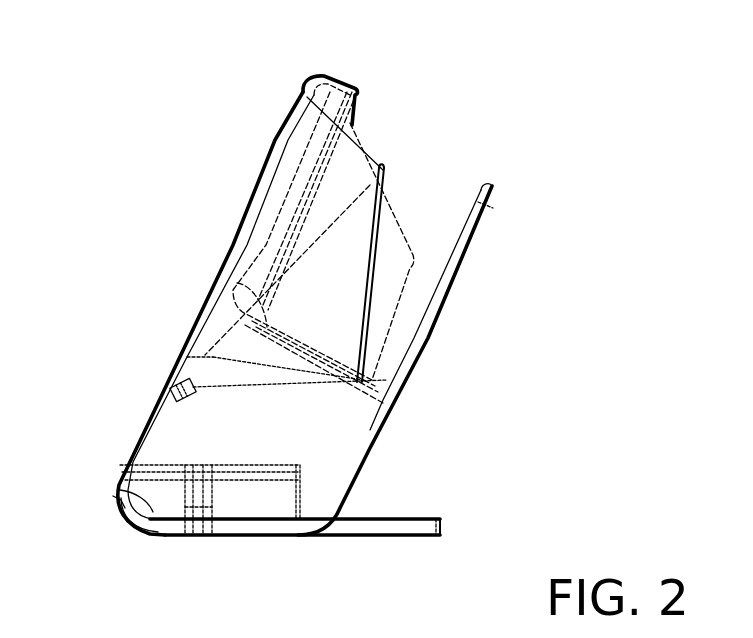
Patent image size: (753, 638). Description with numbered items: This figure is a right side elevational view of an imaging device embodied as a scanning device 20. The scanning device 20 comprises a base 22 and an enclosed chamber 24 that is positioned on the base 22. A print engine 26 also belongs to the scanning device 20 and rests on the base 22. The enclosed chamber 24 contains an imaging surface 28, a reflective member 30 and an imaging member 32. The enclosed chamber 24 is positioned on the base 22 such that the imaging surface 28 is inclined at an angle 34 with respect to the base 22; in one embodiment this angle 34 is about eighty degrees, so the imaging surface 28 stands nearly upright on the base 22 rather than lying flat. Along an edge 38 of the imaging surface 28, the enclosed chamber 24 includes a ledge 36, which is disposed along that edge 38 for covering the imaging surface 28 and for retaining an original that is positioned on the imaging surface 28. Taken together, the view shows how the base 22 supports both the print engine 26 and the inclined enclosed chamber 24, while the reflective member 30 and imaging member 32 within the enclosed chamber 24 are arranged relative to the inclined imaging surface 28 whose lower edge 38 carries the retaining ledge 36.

The scanning device 20 is at (145, 116).
The base 22 is at (362, 526).
The enclosed chamber 24 is at (375, 455).
The print engine 26 is at (165, 490).
The imaging surface 28 is at (326, 80).
The reflective member 30 is at (387, 172).
The imaging member 32 is at (192, 400).
The angle 34 is at (153, 510).
The ledge 36 is at (115, 496).
The edge 38 is at (113, 486).